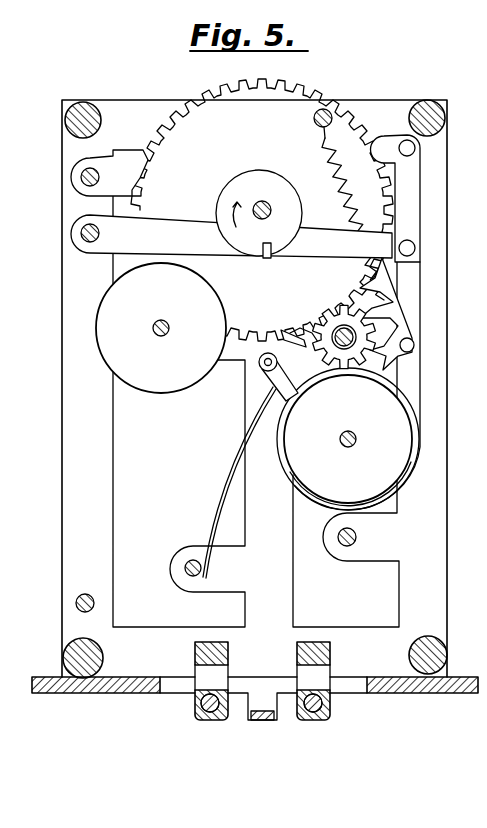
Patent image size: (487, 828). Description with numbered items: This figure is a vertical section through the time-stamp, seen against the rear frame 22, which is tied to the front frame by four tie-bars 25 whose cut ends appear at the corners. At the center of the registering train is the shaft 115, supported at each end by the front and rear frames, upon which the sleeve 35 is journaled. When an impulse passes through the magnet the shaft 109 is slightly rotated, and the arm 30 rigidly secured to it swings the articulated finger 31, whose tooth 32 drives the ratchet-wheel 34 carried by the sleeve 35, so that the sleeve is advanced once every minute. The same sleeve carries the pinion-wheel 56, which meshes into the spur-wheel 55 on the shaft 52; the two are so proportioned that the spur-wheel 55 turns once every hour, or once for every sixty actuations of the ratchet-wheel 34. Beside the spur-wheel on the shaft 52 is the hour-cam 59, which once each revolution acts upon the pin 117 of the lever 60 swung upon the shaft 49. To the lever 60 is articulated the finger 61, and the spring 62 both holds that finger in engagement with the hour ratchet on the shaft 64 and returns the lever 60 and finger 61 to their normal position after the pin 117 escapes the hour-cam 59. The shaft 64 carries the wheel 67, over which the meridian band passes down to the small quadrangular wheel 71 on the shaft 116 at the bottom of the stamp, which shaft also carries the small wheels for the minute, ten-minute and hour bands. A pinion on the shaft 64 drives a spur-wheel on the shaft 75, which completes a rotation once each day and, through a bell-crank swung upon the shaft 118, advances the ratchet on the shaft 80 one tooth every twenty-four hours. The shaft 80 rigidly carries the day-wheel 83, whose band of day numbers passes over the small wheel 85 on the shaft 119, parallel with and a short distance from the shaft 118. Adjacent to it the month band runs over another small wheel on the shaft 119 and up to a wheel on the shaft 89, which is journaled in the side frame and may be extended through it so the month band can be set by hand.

The rear frame 22 is at (255, 410).
The tie-bars 25 is at (66, 122).
The arm 30 is at (122, 160).
The finger 31 is at (412, 194).
The tooth 32 is at (388, 358).
The ratchet-wheel 34 is at (366, 304).
The sleeve 35 is at (352, 334).
The shaft 49 is at (80, 236).
The shaft 52 is at (268, 205).
The spur-wheel 55 is at (262, 210).
The pinion-wheel 56 is at (338, 328).
The hour-cam 59 is at (219, 207).
The lever 60 is at (231, 236).
The finger 61 is at (412, 388).
The spring 62 is at (347, 213).
The shaft 64 is at (345, 446).
The wheel 67 is at (348, 440).
The small quadrangular wheel 71 is at (306, 724).
The shaft 75 is at (357, 539).
The shaft 80 is at (160, 322).
The day-wheel 83 is at (161, 328).
The small wheel 85 is at (210, 724).
The shaft 89 is at (192, 560).
The shaft 109 is at (80, 178).
The shaft 115 is at (317, 318).
The shaft 116 is at (322, 706).
The pin 117 is at (266, 258).
The shaft 118 is at (95, 602).
The shaft 119 is at (203, 705).